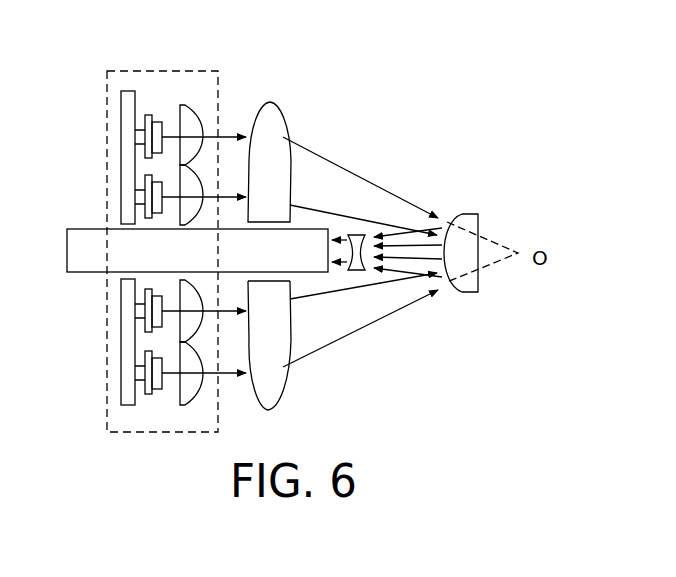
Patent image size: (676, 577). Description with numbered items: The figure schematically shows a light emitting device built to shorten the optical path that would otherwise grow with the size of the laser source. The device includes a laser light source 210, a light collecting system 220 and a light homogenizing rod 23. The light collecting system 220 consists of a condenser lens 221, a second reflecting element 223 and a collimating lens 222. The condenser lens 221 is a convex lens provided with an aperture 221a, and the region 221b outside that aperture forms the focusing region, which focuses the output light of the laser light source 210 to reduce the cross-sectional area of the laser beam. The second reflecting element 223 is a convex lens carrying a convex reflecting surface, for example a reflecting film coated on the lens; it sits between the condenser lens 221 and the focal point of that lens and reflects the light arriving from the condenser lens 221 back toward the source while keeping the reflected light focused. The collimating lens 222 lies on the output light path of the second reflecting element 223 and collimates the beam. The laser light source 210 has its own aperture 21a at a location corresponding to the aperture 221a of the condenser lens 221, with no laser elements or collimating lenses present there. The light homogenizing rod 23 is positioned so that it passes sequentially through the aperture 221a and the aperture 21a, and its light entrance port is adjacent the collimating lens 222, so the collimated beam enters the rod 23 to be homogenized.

The laser light source 210 is at (152, 85).
The light homogenizing rod 23 is at (82, 240).
The aperture 21a is at (186, 254).
The light collecting system 220 is at (390, 258).
The condenser lens 221 is at (349, 258).
The aperture 221a is at (283, 276).
The focusing region 221b is at (287, 375).
The collimating lens 222 is at (358, 233).
The second reflecting element 223 is at (448, 214).